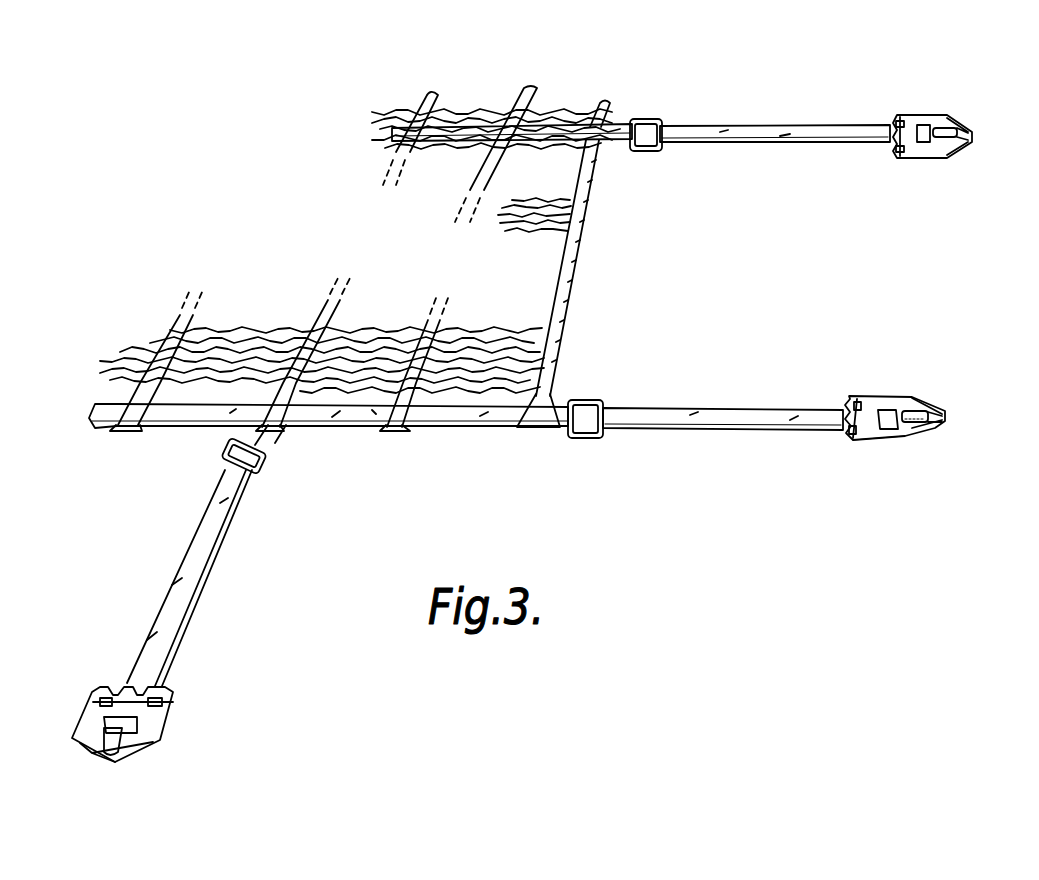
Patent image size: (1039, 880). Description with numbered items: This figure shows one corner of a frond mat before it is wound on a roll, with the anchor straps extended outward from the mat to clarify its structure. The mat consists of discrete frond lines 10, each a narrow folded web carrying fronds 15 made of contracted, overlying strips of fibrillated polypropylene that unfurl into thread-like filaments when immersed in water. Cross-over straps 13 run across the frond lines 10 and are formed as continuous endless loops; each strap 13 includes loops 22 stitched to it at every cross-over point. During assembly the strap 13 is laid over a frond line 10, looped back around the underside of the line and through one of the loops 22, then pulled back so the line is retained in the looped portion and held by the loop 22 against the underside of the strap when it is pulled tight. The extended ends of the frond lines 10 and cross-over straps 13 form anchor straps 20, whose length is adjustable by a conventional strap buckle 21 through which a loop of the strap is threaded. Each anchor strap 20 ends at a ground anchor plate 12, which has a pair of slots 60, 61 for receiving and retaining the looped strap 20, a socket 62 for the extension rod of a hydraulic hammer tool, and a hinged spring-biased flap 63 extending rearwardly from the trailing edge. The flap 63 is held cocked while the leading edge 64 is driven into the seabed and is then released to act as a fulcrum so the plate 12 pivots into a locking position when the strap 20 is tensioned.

The frond line 10 is at (190, 320).
The ground anchor plate 12 is at (948, 114).
The cross-strap 13 is at (448, 130).
The frond 15 is at (578, 112).
The anchor strap 20 is at (796, 137).
The strap buckle 21 is at (653, 123).
The loop 22 is at (418, 110).
The slot 60 is at (862, 440).
The slot 61 is at (900, 437).
The socket 62 is at (908, 410).
The hinged spring-biased flap 63 is at (852, 395).
The leading edge 64 is at (942, 427).